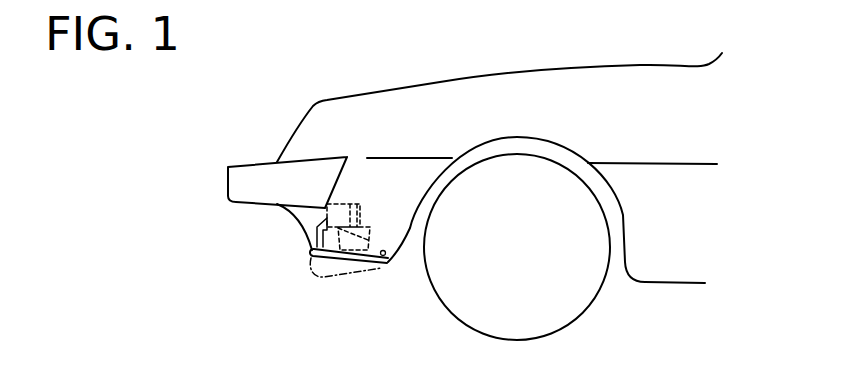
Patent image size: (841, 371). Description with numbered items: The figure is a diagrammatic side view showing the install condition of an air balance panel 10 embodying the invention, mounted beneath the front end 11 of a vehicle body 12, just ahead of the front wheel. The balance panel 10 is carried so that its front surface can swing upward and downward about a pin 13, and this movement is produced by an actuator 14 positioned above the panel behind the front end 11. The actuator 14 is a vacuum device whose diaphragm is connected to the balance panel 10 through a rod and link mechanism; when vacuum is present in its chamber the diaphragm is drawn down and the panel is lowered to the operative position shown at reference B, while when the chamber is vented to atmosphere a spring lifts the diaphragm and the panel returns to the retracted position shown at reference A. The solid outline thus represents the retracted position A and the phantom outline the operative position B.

The air balance panel 10 is at (313, 235).
The front end 11 is at (300, 218).
The vehicle body 12 is at (297, 128).
The pin 13 is at (384, 263).
The actuator 14 is at (367, 223).
The retracted position A is at (308, 255).
The operative position B is at (323, 280).